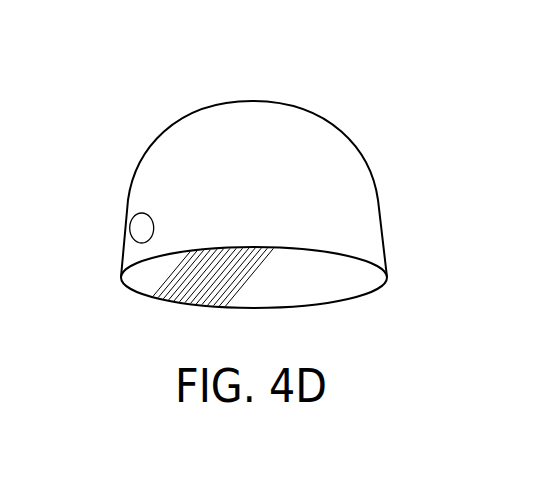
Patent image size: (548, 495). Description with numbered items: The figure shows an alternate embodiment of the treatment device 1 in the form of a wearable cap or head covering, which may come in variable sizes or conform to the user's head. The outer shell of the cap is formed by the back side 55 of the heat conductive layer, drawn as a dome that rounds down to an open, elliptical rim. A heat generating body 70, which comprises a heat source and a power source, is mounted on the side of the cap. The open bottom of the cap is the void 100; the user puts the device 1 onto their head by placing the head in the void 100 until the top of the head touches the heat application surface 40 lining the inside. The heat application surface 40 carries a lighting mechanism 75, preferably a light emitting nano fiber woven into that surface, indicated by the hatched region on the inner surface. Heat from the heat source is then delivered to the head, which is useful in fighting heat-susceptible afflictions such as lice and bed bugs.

The treatment device 1 is at (234, 201).
The back side 55 is at (288, 121).
The heat generating body 70 is at (140, 228).
The lighting mechanism 75 is at (244, 299).
The heat application surface 40 is at (268, 281).
The void 100 is at (131, 297).